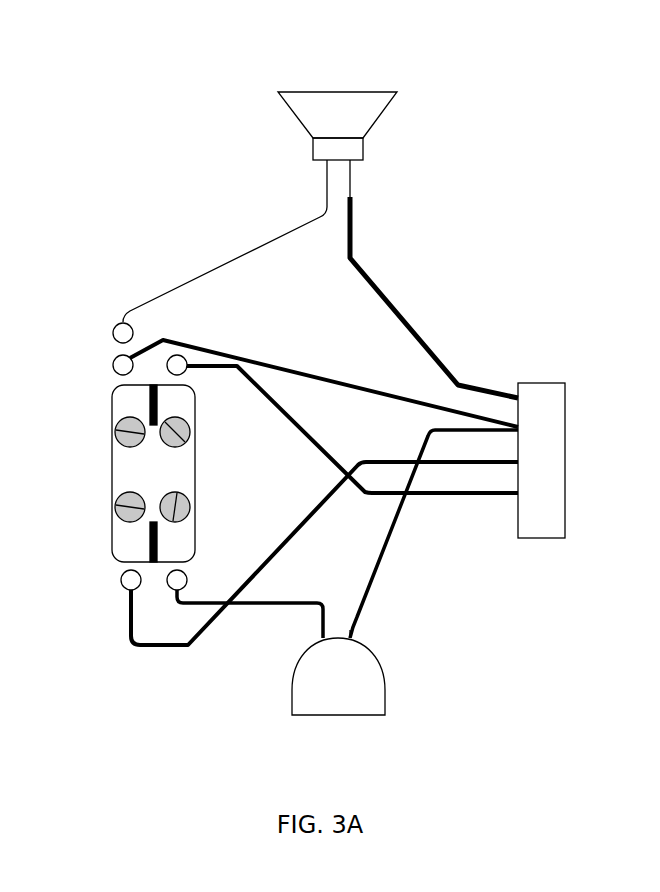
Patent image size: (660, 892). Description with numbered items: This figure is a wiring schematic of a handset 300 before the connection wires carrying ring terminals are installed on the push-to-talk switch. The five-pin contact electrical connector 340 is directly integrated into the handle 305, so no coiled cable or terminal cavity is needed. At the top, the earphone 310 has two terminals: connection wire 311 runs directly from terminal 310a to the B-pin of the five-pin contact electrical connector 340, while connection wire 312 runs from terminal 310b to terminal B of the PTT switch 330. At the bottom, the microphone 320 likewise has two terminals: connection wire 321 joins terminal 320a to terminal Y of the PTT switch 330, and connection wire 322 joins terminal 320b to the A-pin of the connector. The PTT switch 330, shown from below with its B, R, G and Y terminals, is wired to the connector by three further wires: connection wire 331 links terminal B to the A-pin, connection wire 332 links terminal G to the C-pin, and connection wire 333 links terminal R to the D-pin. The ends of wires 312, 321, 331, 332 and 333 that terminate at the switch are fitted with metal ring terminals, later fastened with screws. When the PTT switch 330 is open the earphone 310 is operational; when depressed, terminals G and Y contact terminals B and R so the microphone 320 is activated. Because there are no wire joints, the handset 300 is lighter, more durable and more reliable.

The handset 300 is at (172, 93).
The handle 305 is at (177, 183).
The earphone 310 is at (337, 102).
The terminal of earphone 310a is at (382, 178).
The terminal of earphone 310b is at (287, 178).
The connection wire 311 is at (434, 297).
The connection wire 312 is at (225, 259).
The microphone 320 is at (338, 700).
The terminal of microphone 320a is at (294, 637).
The terminal of microphone 320b is at (384, 637).
The connection wire 321 is at (242, 614).
The connection wire 322 is at (434, 534).
The PTT switch 330 is at (187, 456).
The connection wire 331 is at (324, 383).
The connection wire 332 is at (324, 573).
The connection wire 333 is at (352, 429).
The 5-pin contact electrical connector 340 is at (541, 432).